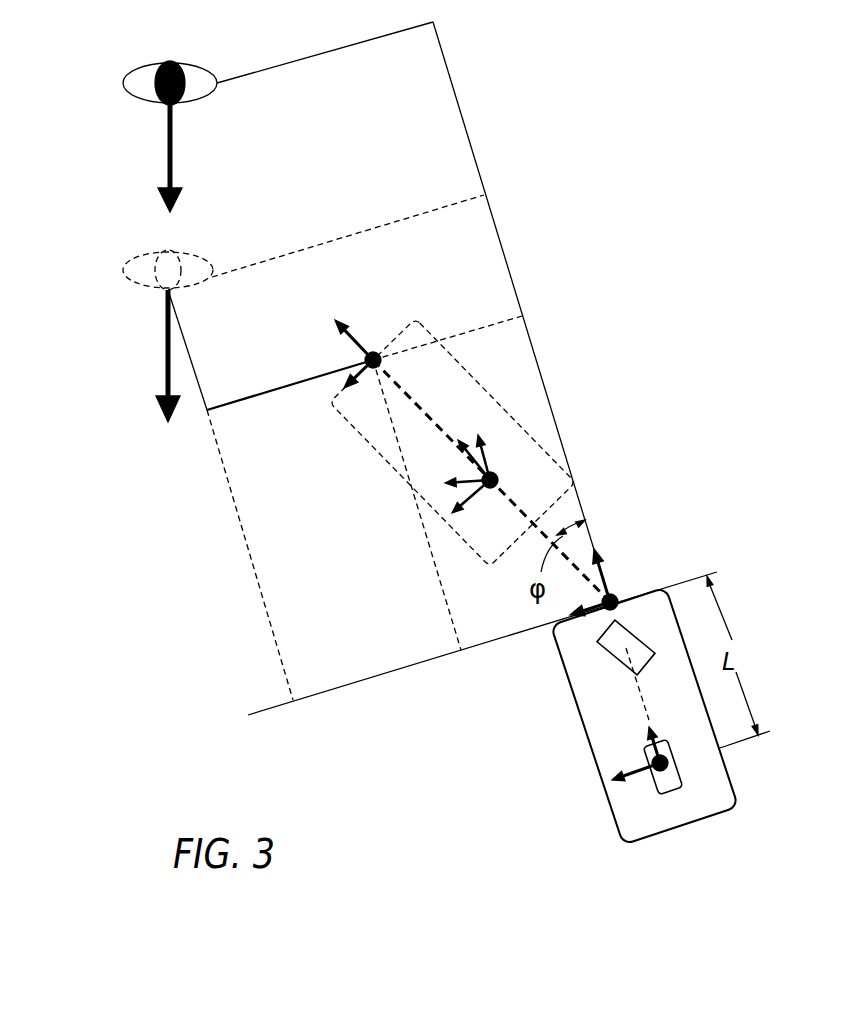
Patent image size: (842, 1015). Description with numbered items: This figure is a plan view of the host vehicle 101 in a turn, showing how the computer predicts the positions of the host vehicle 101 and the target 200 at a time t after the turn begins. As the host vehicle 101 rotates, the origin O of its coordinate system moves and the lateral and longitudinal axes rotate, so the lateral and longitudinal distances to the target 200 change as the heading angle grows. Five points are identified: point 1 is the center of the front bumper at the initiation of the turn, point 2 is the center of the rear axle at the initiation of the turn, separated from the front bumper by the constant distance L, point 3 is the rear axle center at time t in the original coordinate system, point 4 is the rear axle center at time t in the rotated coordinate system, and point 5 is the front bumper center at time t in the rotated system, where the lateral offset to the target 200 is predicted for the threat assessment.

The target 200 is at (138, 68).
The host vehicle 101 is at (446, 318).
The point 5 is at (364, 360).
The point 3 is at (498, 477).
The point 4 is at (490, 489).
The point 1 is at (614, 596).
The point 2 is at (670, 768).